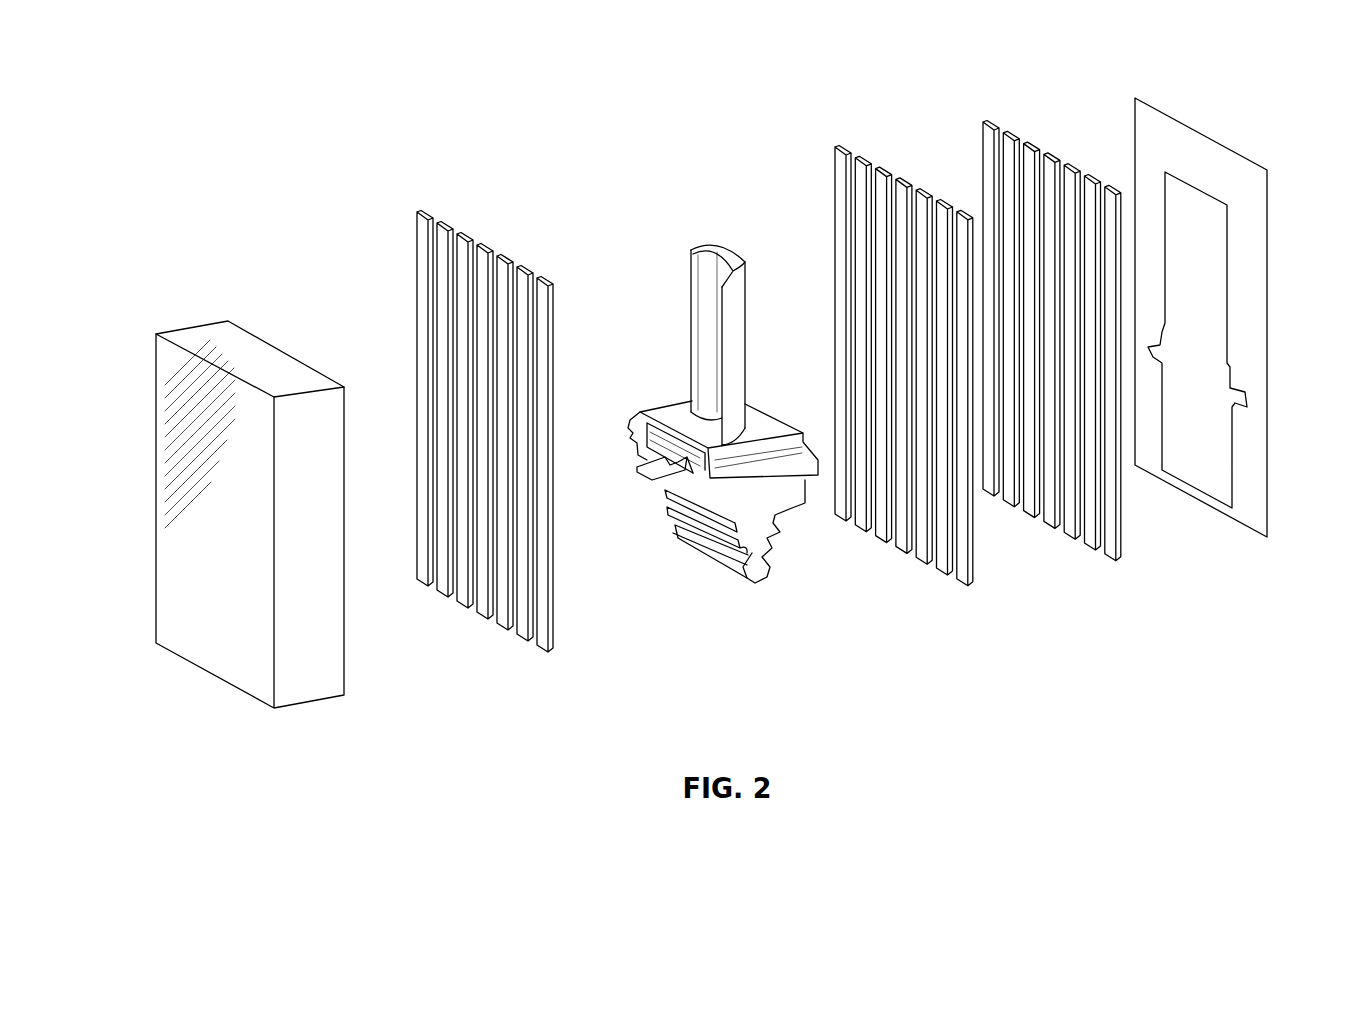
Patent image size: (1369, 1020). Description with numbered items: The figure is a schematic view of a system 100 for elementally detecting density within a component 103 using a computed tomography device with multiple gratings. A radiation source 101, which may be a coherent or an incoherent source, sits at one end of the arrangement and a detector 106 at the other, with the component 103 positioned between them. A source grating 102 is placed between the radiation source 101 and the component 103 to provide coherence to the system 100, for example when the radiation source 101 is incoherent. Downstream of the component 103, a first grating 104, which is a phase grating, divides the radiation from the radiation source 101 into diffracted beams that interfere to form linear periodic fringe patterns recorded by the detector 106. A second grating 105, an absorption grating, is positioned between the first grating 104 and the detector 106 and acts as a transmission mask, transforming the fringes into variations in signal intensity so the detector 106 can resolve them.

The system 100 is at (415, 165).
The radiation source 101 is at (344, 652).
The source grating 102 is at (555, 618).
The component 103 is at (768, 578).
The first grating 104 is at (973, 558).
The second grating 105 is at (1119, 523).
The detector 106 is at (1268, 485).